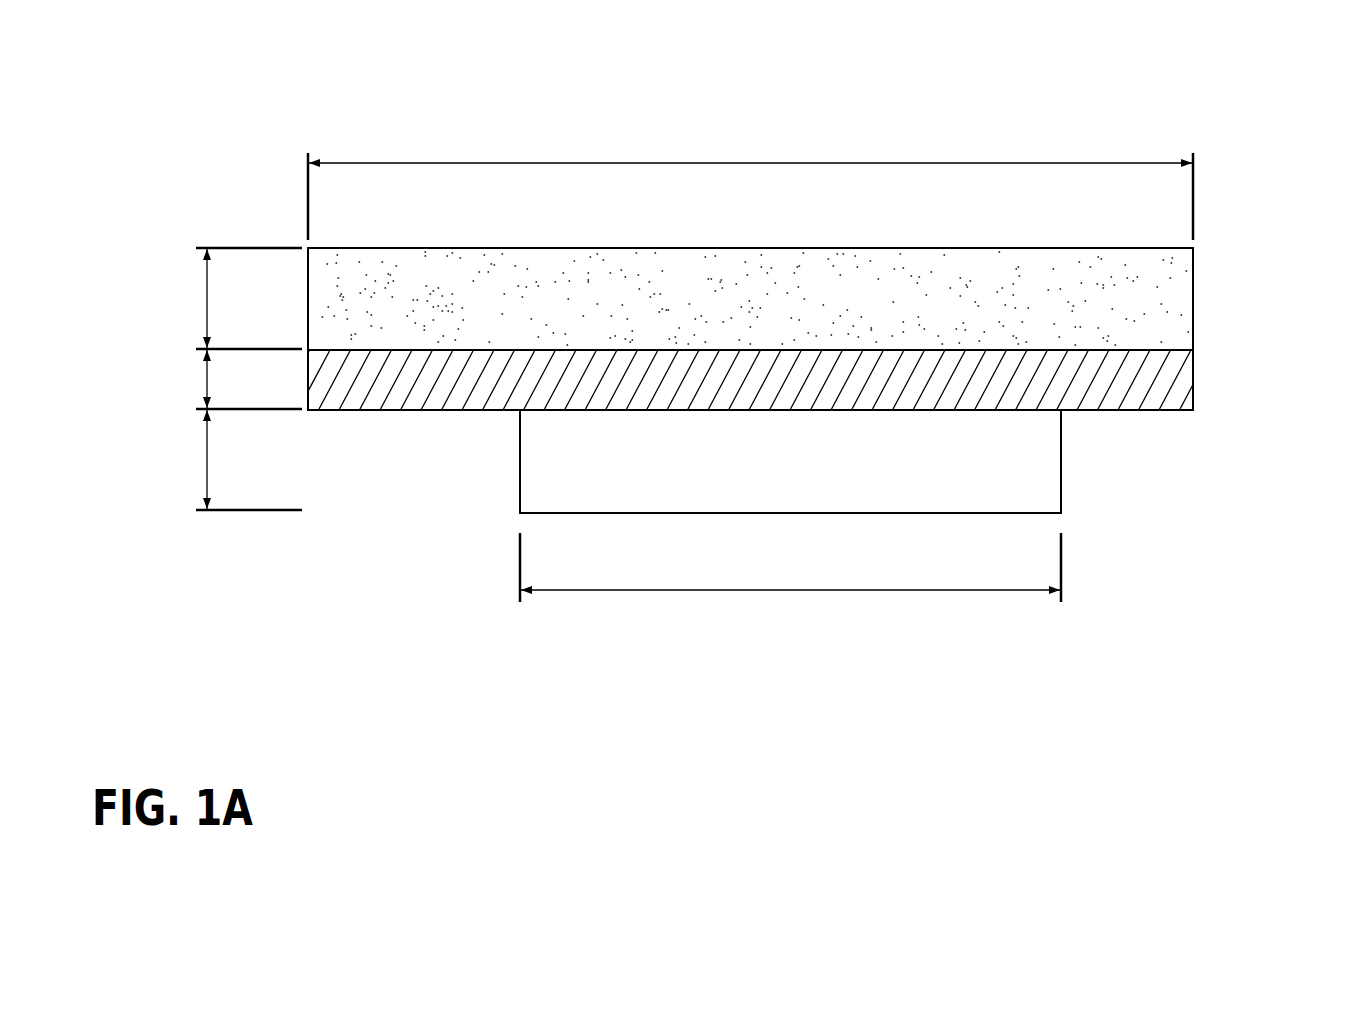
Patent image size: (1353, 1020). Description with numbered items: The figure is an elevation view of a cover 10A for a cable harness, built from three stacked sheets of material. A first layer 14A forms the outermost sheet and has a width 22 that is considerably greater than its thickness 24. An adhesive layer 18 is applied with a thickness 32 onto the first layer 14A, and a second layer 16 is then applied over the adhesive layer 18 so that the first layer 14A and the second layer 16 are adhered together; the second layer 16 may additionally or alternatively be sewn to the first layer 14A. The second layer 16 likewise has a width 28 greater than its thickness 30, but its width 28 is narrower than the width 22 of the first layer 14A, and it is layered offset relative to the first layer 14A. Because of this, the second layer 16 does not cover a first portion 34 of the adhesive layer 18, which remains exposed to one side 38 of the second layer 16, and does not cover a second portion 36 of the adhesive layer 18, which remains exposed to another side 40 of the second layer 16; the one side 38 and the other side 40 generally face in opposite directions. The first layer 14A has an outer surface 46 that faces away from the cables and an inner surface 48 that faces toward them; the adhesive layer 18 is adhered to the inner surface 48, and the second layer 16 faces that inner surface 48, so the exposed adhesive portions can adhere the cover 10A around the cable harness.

The cover 10A is at (396, 100).
The first layer 14A is at (1162, 297).
The adhesive layer 18 is at (1153, 373).
The second layer 16 is at (1028, 445).
The width 22 is at (703, 160).
The width 28 is at (798, 591).
The thickness 24 is at (203, 298).
The thickness 32 is at (205, 379).
The thickness 30 is at (207, 456).
The outer surface 46 is at (720, 247).
The inner surface 48 is at (430, 350).
The second portion 36 is at (349, 419).
The first portion 34 is at (1146, 421).
The other side 40 is at (520, 473).
The one side 38 is at (1062, 495).